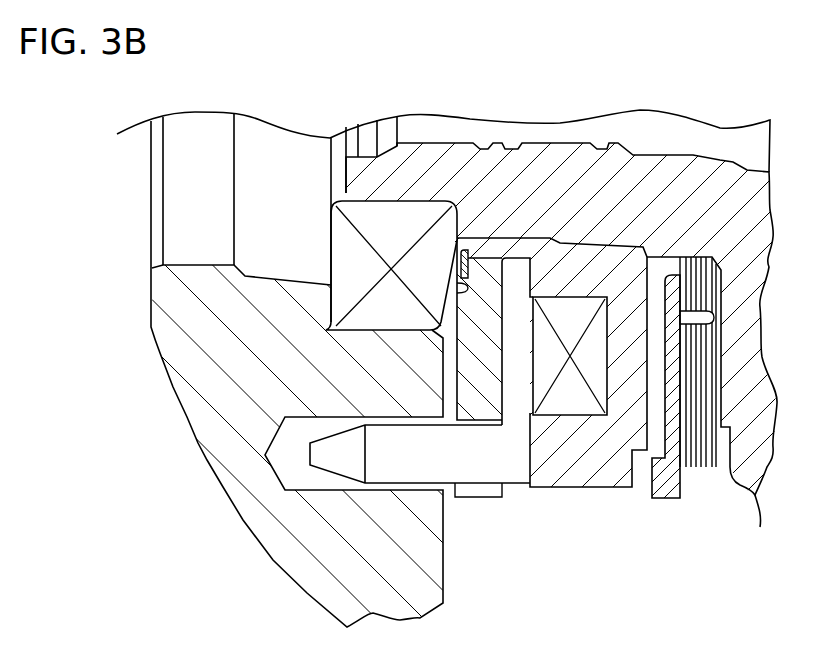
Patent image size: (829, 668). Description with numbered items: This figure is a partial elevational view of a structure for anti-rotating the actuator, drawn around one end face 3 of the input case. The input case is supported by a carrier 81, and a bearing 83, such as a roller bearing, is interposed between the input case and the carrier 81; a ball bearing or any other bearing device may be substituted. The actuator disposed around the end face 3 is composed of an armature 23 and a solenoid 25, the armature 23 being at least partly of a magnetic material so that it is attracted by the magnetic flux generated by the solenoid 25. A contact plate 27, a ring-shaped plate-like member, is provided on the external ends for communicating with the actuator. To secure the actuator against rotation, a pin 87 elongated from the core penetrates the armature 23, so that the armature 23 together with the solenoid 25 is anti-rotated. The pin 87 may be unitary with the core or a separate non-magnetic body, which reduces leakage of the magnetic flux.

The end face 3 is at (730, 480).
The armature 23 is at (507, 410).
The solenoid 25 is at (605, 490).
The contact plate 27 is at (673, 500).
The carrier 81 is at (211, 470).
The bearing 83 is at (318, 250).
The pin 87 is at (447, 462).